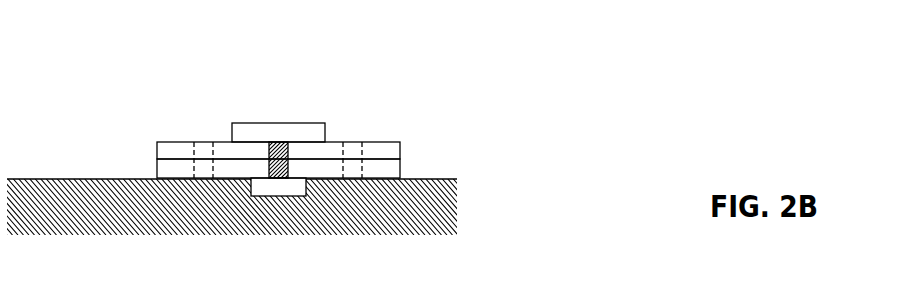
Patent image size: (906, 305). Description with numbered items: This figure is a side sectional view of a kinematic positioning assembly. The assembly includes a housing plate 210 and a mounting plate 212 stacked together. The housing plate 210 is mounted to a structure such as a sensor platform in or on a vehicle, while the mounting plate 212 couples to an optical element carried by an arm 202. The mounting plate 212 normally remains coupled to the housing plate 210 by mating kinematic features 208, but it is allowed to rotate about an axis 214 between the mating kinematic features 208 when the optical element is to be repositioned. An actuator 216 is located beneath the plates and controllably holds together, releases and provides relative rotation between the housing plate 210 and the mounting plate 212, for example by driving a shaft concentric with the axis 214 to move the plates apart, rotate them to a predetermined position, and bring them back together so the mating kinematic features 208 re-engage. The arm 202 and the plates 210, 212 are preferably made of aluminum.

The arm 202 is at (270, 125).
The mating kinematic features 208 is at (205, 153).
The housing plate 210 is at (392, 170).
The mounting plate 212 is at (170, 141).
The axis 214 is at (287, 146).
The actuator 216 is at (268, 198).